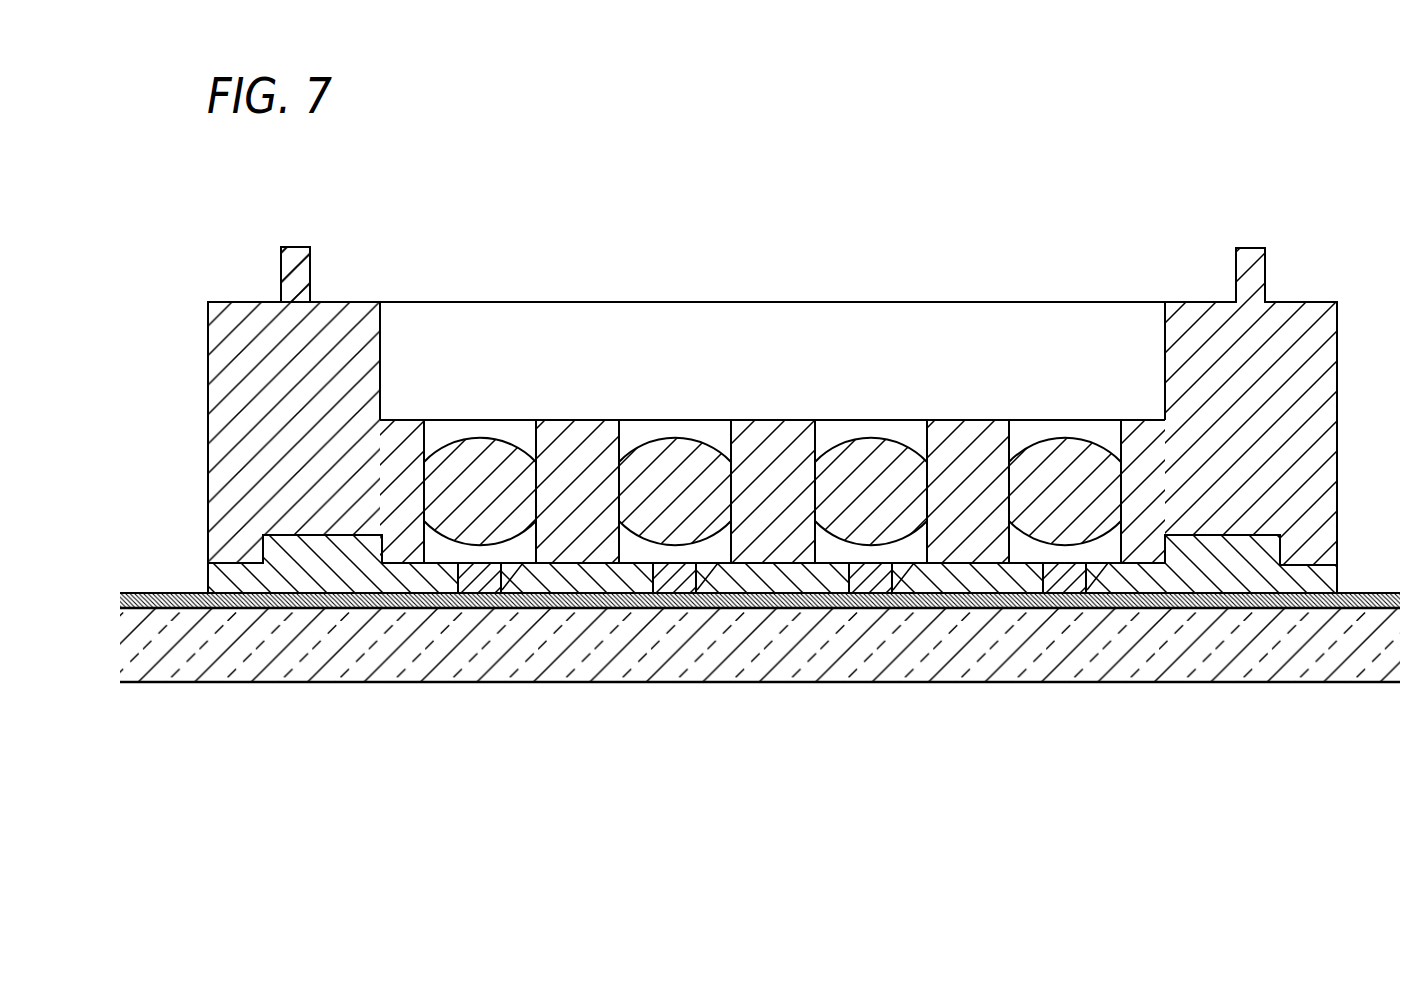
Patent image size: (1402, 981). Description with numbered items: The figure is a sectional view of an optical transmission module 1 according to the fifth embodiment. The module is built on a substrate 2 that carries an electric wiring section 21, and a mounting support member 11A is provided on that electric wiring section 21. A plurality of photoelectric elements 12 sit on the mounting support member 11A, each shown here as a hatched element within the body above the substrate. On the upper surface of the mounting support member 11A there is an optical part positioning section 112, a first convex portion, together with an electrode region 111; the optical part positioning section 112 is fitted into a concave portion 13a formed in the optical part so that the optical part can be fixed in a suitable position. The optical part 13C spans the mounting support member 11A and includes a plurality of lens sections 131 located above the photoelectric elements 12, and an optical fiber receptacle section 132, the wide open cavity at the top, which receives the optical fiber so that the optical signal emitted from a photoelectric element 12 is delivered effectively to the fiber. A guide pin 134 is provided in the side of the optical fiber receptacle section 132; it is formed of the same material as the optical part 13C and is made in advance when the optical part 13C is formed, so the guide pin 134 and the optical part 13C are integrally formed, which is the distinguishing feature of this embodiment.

The optical transmission module 1 is at (762, 459).
The substrate 2 is at (1093, 650).
The electric wiring section 21 is at (735, 605).
The mounting support member 11A is at (1163, 578).
The electrode pad 111 is at (523, 606).
The optical part positioning section 112 is at (345, 600).
The photoelectric element 12 is at (873, 593).
The concave portion 13a is at (345, 600).
The optical part 13C is at (1288, 335).
The lens section 131 is at (482, 438).
The optical fiber receptacle section 132 is at (828, 360).
The guide pin 134 is at (308, 250).